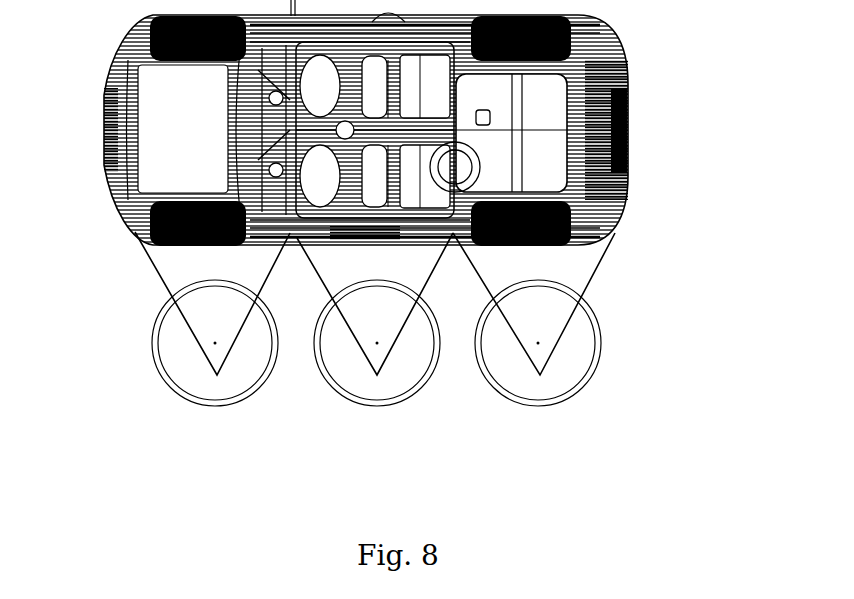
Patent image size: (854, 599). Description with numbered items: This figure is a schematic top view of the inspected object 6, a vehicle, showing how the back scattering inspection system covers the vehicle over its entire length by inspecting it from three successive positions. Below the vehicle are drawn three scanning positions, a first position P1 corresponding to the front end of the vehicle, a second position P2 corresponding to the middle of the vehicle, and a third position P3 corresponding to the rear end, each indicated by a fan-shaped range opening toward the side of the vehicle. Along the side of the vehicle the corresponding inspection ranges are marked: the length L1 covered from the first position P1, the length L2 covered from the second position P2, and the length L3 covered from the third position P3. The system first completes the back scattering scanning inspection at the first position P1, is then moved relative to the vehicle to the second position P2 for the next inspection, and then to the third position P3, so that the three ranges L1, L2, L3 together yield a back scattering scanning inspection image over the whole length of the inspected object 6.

The inspected object 6 is at (540, 153).
The length of the back scattering inspection range at the first position L1 is at (198, 226).
The length of the back scattering inspection range at the second position L2 is at (365, 237).
The length of the back scattering inspection range at the third position L3 is at (521, 226).
The first position P1 is at (212, 335).
The second position P2 is at (375, 335).
The third position P3 is at (534, 335).